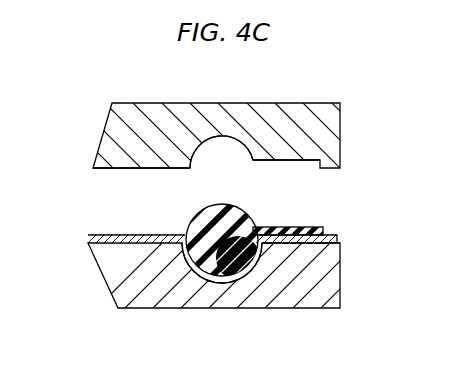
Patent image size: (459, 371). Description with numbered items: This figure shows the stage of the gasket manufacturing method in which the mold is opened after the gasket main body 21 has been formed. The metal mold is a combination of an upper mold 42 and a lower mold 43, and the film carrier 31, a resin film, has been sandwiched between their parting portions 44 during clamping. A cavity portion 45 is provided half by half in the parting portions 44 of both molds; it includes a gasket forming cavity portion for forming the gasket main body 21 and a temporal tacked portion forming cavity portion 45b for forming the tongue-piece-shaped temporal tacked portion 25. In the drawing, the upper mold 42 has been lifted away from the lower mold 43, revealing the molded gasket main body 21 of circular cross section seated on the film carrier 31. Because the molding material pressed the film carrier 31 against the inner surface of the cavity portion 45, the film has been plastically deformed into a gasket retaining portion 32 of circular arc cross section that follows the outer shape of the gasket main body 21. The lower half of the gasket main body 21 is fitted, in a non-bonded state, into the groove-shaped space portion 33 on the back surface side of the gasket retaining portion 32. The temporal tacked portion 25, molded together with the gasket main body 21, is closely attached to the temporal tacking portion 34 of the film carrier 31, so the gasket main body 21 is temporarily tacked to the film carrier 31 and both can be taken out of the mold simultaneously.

The upper mold 42 is at (107, 140).
The parting portions 44 is at (118, 169).
The cavity portion 45 is at (222, 147).
The temporal tacked portion forming cavity portion 45b is at (283, 161).
The gasket main body 21 is at (232, 209).
The temporal tacked portion 25 is at (310, 228).
The film carrier 31 is at (337, 239).
The lower mold 43 is at (118, 278).
The gasket retaining portion 32 is at (197, 276).
The space portion 33 is at (236, 273).
The temporal tacking portion 34 is at (303, 247).